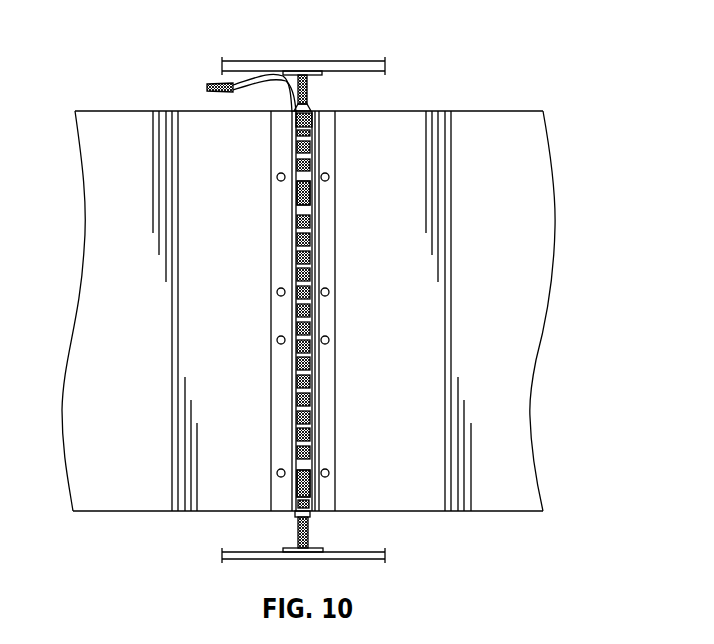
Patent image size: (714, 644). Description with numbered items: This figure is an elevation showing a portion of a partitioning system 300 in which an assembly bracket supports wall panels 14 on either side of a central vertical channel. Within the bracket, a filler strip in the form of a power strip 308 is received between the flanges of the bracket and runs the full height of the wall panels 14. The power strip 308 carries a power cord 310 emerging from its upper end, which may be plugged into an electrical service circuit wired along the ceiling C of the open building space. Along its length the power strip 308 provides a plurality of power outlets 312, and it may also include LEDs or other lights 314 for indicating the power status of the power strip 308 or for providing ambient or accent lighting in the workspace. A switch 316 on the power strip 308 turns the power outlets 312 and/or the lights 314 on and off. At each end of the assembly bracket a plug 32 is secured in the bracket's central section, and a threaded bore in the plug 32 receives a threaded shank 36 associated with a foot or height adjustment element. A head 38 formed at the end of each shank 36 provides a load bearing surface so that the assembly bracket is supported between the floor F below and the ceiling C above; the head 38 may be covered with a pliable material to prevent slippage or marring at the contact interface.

The wall panels 14 is at (252, 353).
The partitioning system 300 is at (540, 66).
The power strip 308 is at (311, 388).
The power cord 310 is at (212, 82).
The power outlets 312 is at (278, 179).
The lights 314 is at (311, 197).
The switch 316 is at (297, 133).
The plug 32 is at (318, 109).
The threaded shank 36 is at (286, 73).
The head 38 is at (315, 75).
The ceiling C is at (376, 73).
The floor F is at (370, 552).